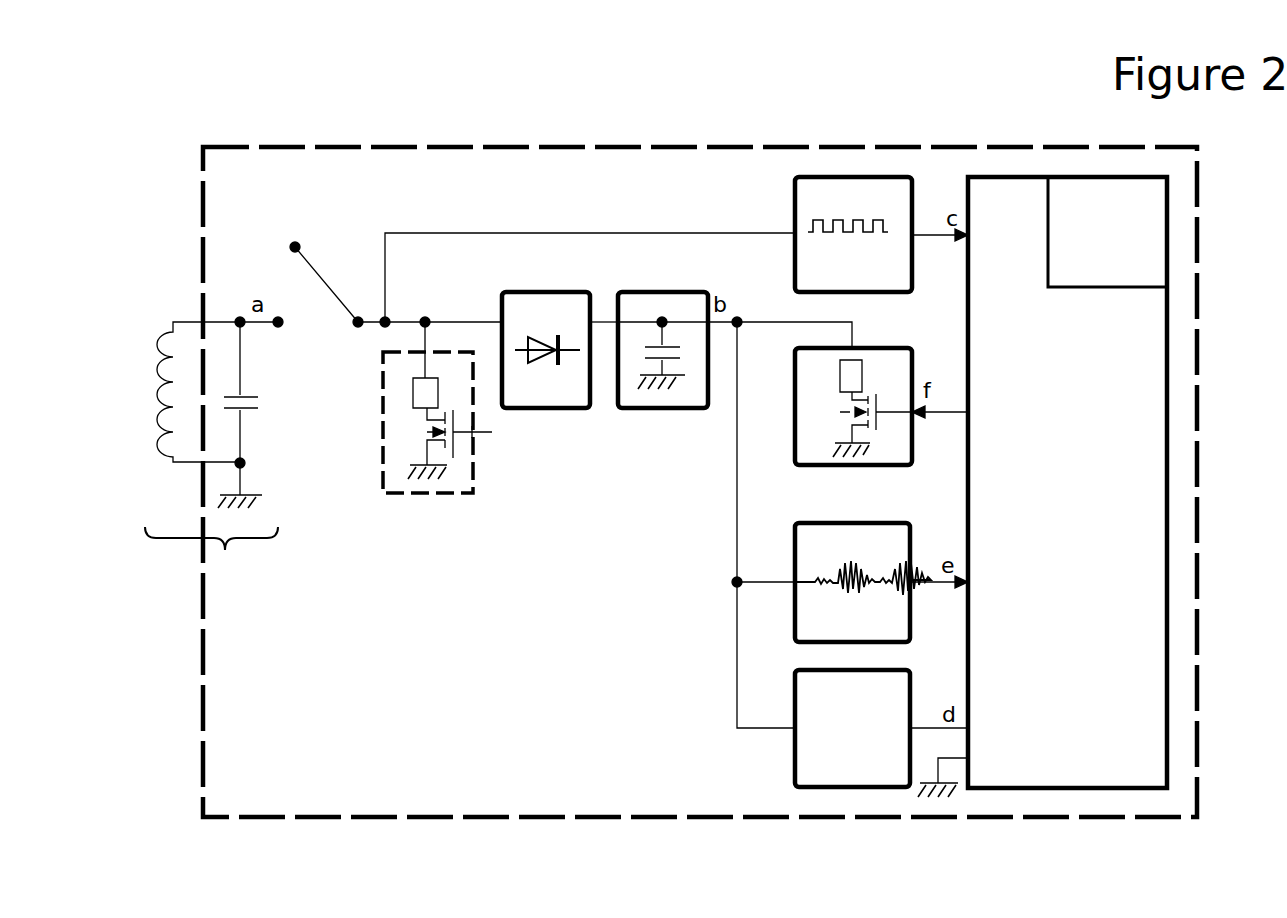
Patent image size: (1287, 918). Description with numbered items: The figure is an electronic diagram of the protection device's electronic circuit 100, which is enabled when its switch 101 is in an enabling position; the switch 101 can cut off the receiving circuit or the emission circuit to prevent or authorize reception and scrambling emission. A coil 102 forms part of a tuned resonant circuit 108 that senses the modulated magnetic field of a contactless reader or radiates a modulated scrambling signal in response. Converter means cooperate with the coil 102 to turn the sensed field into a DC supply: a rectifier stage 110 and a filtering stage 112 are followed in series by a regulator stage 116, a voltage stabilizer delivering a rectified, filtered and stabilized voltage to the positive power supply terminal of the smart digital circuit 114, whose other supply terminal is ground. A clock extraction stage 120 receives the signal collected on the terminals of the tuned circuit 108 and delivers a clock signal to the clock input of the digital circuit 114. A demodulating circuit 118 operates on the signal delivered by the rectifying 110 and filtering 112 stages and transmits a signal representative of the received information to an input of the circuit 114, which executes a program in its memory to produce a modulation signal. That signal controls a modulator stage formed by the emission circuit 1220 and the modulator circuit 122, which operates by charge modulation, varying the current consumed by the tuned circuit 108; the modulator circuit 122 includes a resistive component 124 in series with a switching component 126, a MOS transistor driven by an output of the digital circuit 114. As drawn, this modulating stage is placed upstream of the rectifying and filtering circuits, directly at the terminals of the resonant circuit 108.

The electronic circuit 100 is at (192, 155).
The switch 101 is at (327, 285).
The coil 102 is at (157, 398).
The tuned resonant circuit 108 is at (161, 458).
The rectifier stage 110 is at (548, 410).
The filtering stage 112 is at (663, 410).
The smart digital circuit 114 is at (1172, 630).
The regulator stage 116 is at (793, 750).
The demodulating circuit 118 is at (795, 598).
The clock extraction stage 120 is at (818, 178).
The modulator circuit 122 is at (864, 409).
The resistive component 124 is at (865, 362).
The switching component 126 is at (877, 428).
The emission circuit 1220 is at (443, 493).